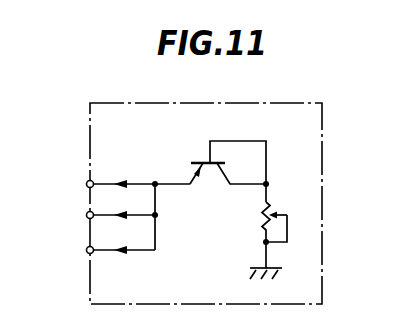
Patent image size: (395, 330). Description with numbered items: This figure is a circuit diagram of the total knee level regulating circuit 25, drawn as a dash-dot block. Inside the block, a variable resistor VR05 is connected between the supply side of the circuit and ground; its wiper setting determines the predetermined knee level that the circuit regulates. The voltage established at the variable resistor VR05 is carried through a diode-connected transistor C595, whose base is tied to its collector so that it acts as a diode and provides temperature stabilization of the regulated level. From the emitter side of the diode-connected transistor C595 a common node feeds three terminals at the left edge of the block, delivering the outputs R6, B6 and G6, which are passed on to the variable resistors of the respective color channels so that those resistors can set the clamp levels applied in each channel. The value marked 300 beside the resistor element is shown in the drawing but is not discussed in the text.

The total knee level regulating circuit 25 is at (323, 185).
The output R6 is at (120, 187).
The output B6 is at (102, 218).
The output G6 is at (102, 253).
The diode-connected transistor C595 is at (229, 172).
The resistor 300 is at (257, 235).
The variable resistor VR05 is at (250, 232).